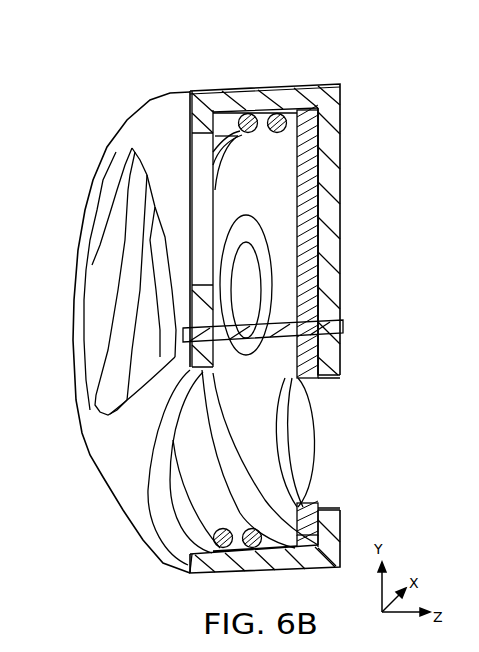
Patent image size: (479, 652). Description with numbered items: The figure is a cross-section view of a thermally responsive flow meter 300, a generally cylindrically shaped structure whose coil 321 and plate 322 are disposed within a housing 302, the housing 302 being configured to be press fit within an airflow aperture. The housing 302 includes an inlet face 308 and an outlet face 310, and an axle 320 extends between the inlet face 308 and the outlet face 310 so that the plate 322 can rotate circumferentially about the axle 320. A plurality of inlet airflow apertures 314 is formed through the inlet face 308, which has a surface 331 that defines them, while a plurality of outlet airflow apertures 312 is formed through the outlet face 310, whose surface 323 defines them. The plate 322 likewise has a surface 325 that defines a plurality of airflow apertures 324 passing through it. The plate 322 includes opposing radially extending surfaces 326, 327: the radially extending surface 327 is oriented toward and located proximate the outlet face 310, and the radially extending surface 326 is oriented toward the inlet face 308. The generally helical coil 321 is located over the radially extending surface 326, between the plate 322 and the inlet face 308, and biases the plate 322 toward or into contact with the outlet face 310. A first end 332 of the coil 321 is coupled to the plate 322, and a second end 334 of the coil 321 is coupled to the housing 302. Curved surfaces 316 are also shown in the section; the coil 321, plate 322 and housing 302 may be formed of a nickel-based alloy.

The thermally responsive flow meter 300 is at (96, 102).
The housing 302 is at (262, 95).
The inlet face 308 is at (172, 139).
The outlet face 310 is at (336, 151).
The outlet airflow apertures 312 is at (331, 445).
The inlet airflow apertures 314 is at (100, 233).
The curved surface 316 is at (321, 112).
The axle 320 is at (340, 331).
The coil 321 is at (233, 120).
The plate 322 is at (300, 246).
The surface 323 is at (333, 488).
The airflow apertures 324 is at (281, 416).
The surface 325 is at (230, 224).
The radially extending surface 326 is at (273, 187).
The radially extending surface 327 is at (320, 177).
The surface 331 is at (174, 434).
The first end 332 is at (280, 113).
The second end 334 is at (207, 538).